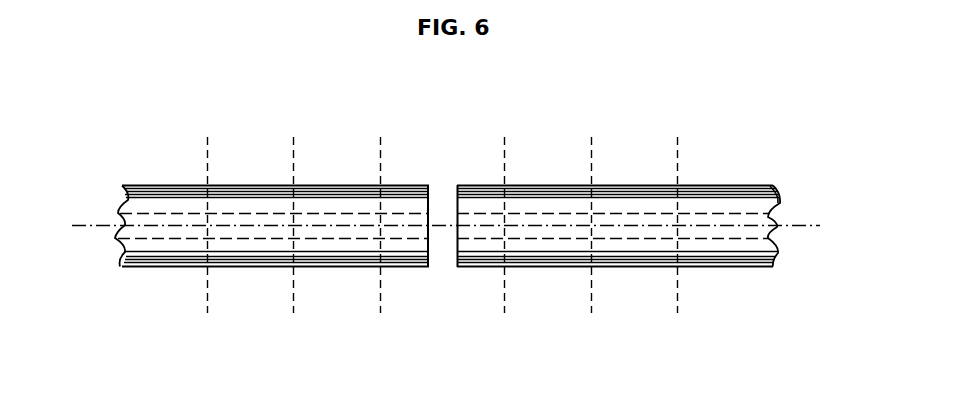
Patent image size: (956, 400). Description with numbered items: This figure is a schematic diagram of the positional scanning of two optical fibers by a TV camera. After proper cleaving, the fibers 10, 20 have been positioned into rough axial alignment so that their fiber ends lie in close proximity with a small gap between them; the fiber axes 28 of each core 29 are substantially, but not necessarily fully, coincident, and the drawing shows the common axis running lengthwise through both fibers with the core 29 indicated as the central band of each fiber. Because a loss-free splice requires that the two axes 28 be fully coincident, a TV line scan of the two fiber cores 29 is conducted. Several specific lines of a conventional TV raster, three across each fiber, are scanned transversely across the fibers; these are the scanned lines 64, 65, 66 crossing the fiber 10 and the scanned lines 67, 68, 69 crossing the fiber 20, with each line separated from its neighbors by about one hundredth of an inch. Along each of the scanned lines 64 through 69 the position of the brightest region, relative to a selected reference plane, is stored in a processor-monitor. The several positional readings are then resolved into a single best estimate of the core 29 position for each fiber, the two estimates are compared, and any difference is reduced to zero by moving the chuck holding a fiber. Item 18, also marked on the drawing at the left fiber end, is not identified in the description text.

The fiber 10 is at (140, 250).
The end face of first optical fiber 18 is at (92, 225).
The fiber 20 is at (753, 252).
The fiber axis 28 is at (800, 223).
The core 29 is at (773, 211).
The scanned line 64 is at (208, 153).
The scanned line 65 is at (294, 153).
The scanned line 66 is at (381, 153).
The scanned line 67 is at (505, 153).
The scanned line 68 is at (592, 153).
The scanned line 69 is at (678, 153).